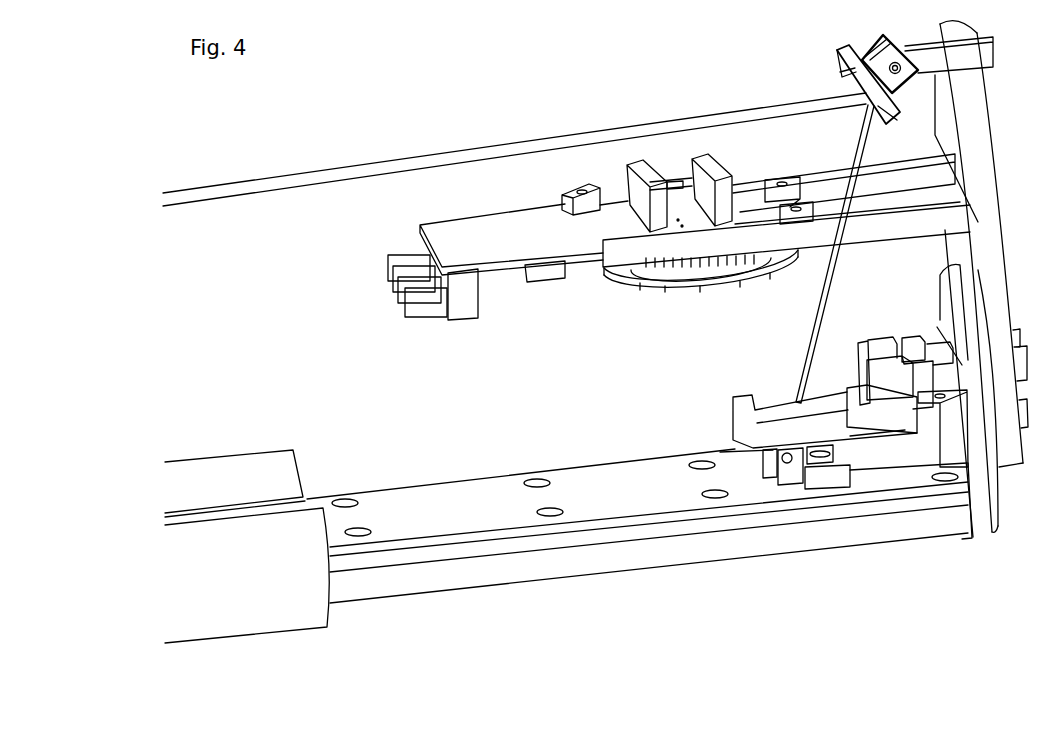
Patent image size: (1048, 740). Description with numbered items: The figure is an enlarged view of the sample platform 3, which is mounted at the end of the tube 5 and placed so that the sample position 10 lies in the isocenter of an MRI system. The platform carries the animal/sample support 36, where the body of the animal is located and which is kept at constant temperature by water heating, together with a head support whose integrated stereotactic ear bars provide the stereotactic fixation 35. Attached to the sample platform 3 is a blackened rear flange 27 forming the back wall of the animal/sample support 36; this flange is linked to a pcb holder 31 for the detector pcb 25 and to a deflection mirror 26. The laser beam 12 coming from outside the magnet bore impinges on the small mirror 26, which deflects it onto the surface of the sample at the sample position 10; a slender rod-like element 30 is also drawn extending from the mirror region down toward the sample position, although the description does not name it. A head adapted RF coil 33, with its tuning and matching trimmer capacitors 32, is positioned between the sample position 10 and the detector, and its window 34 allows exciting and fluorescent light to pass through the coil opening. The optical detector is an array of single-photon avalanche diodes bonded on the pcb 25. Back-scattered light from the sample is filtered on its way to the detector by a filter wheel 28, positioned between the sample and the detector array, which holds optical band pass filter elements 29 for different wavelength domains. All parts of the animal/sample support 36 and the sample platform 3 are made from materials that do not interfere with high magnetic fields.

The sample platform 3 is at (684, 579).
The tube 5 is at (263, 470).
The sample position 10 is at (792, 412).
The laser beam 12 is at (298, 180).
The detector pcb 25 is at (452, 232).
The deflection mirror 26 is at (842, 62).
The rear flange 27 is at (977, 118).
The filter wheel 28 is at (637, 290).
The optical band pass filter elements 29 is at (710, 290).
The rod 30 is at (818, 308).
The pcb holder 31 is at (888, 228).
The trimmer capacitors 32 is at (887, 378).
The RF coil 33 is at (870, 423).
The window 34 is at (822, 420).
The stereotactic fixation 35 is at (788, 462).
The animal/sample support 36 is at (725, 525).